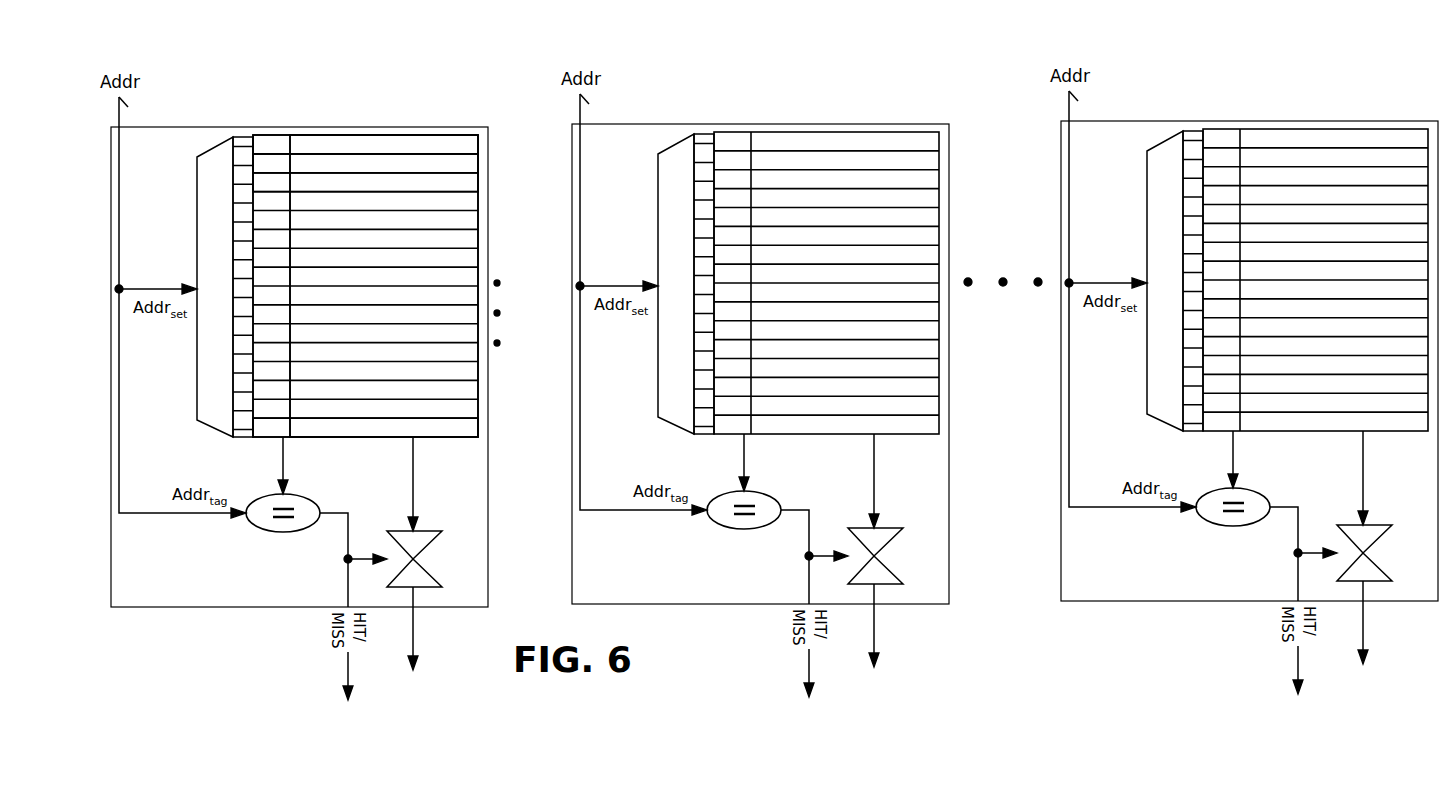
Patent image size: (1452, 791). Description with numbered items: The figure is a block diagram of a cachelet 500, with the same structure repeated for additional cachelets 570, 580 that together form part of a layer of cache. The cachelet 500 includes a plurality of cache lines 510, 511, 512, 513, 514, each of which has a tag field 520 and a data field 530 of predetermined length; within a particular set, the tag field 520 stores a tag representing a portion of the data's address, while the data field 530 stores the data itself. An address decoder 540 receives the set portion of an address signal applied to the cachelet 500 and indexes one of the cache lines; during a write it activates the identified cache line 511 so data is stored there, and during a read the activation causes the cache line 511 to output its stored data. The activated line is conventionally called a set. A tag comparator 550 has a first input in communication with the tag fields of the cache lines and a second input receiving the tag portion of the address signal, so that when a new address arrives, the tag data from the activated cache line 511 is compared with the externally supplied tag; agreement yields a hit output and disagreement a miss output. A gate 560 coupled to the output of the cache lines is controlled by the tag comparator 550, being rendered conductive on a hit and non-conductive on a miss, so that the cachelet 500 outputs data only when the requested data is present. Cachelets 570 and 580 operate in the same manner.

The cachelet 500 is at (299, 367).
The cache line 510 is at (480, 145).
The cache line 511 is at (478, 154).
The cache line 512 is at (529, 189).
The cache line 513 is at (478, 191).
The cache line 514 is at (480, 436).
The tag field 520 is at (252, 118).
The data field 530 is at (478, 118).
The address decoder 540 is at (225, 287).
The tag comparator 550 is at (280, 533).
The gate 560 is at (420, 560).
The cachelet 570 is at (760, 364).
The cachelet 580 is at (1249, 361).